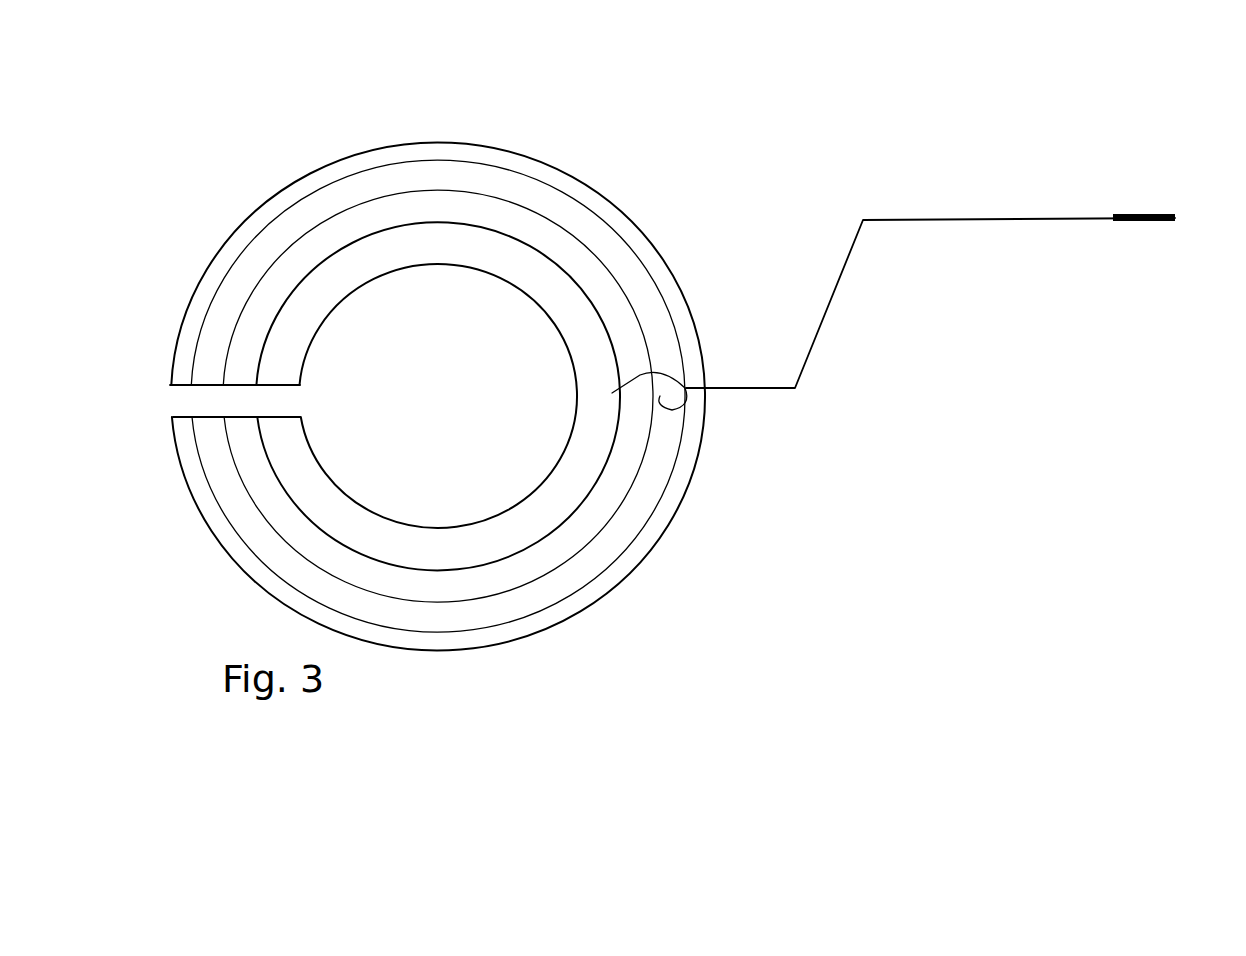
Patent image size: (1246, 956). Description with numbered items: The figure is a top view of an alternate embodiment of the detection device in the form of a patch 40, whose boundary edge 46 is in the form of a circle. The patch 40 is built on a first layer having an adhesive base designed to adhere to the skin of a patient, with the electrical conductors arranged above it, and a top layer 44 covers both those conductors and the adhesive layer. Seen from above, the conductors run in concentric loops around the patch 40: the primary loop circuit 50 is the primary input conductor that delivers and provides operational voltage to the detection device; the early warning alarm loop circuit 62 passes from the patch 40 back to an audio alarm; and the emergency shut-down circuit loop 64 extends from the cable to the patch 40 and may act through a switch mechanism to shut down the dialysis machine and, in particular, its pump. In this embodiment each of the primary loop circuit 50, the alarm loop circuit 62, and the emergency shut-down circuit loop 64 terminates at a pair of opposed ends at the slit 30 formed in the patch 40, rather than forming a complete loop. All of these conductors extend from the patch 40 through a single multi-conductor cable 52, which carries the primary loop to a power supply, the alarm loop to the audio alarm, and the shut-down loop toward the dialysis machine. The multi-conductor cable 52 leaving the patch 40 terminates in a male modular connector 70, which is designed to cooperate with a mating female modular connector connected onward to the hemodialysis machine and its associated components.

The slit 30 is at (215, 405).
The patch 40 is at (656, 350).
The top layer 44 is at (533, 195).
The boundary edge 46 is at (645, 240).
The primary loop circuit 50 is at (415, 225).
The multi-conductor cable 52 is at (928, 215).
The early warning alarm loop circuit 62 is at (337, 210).
The emergency shut-down circuit loop 64 is at (284, 205).
The male modular connector 70 is at (1155, 213).